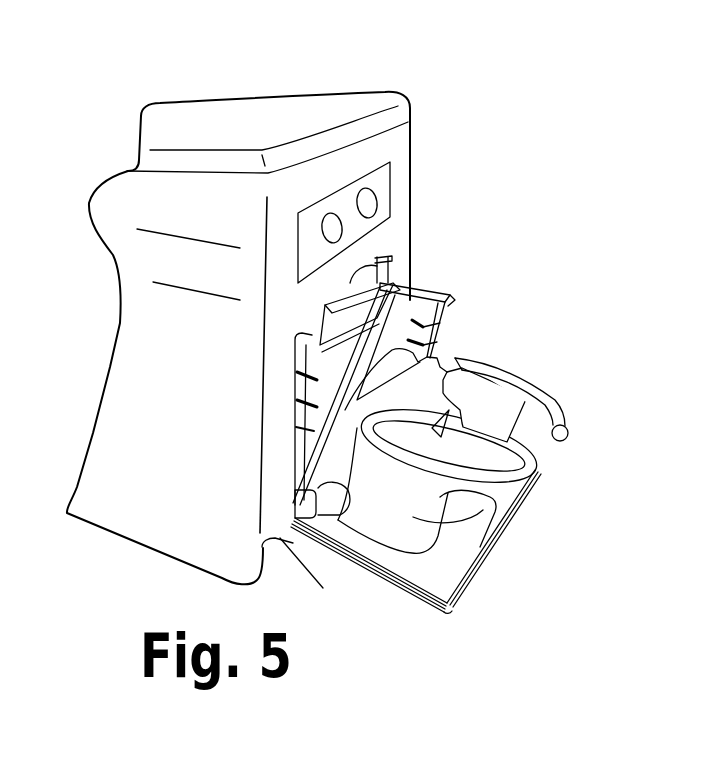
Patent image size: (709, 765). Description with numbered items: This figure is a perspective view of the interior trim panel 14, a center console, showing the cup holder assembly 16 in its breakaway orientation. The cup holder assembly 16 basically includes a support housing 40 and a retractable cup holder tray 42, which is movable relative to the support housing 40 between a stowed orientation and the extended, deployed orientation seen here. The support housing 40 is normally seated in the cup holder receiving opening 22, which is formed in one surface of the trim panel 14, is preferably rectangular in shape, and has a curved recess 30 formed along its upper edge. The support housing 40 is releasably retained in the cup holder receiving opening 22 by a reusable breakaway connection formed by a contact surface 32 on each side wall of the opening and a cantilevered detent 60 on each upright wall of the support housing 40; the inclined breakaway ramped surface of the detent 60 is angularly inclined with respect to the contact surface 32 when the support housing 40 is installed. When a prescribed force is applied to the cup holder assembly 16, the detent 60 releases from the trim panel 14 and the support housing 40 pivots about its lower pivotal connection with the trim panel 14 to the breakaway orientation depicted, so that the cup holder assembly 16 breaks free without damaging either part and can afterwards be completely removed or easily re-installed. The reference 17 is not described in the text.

The interior trim panel 14 is at (422, 148).
The cup holder assembly 16 is at (404, 606).
The tray assembly 17 is at (537, 214).
The cup holder receiving opening 22 is at (300, 332).
The curved recess 30 is at (390, 258).
The contact surface 32 is at (392, 283).
The support housing 40 is at (328, 452).
The cup holder tray 42 is at (364, 570).
The detent 60 is at (447, 333).